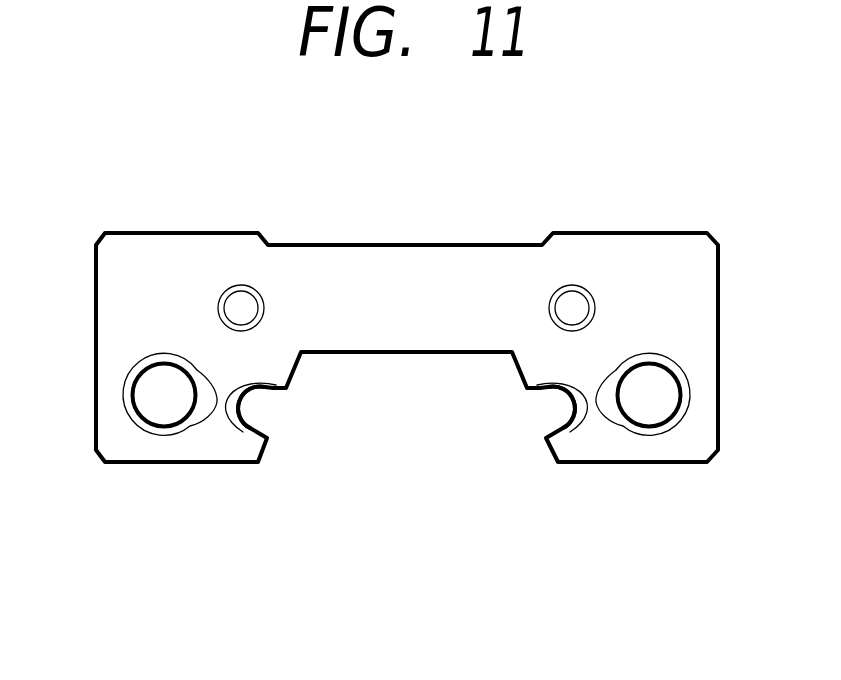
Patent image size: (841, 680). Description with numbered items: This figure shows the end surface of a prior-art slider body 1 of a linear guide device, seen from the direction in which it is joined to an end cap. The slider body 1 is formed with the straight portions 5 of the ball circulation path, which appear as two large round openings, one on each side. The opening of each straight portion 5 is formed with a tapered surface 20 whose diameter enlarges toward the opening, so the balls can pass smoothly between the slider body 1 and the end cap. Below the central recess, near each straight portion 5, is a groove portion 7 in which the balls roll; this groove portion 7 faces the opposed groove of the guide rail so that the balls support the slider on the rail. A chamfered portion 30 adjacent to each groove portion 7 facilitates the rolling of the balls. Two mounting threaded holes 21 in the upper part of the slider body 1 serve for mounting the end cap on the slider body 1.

The slider body 1 is at (116, 300).
The circulation path straight portion 5 is at (155, 420).
The groove portion 7 is at (253, 418).
The tapered surface 20 is at (133, 414).
The mounting threaded hole 21 is at (243, 300).
The chamfered portion 30 is at (197, 421).